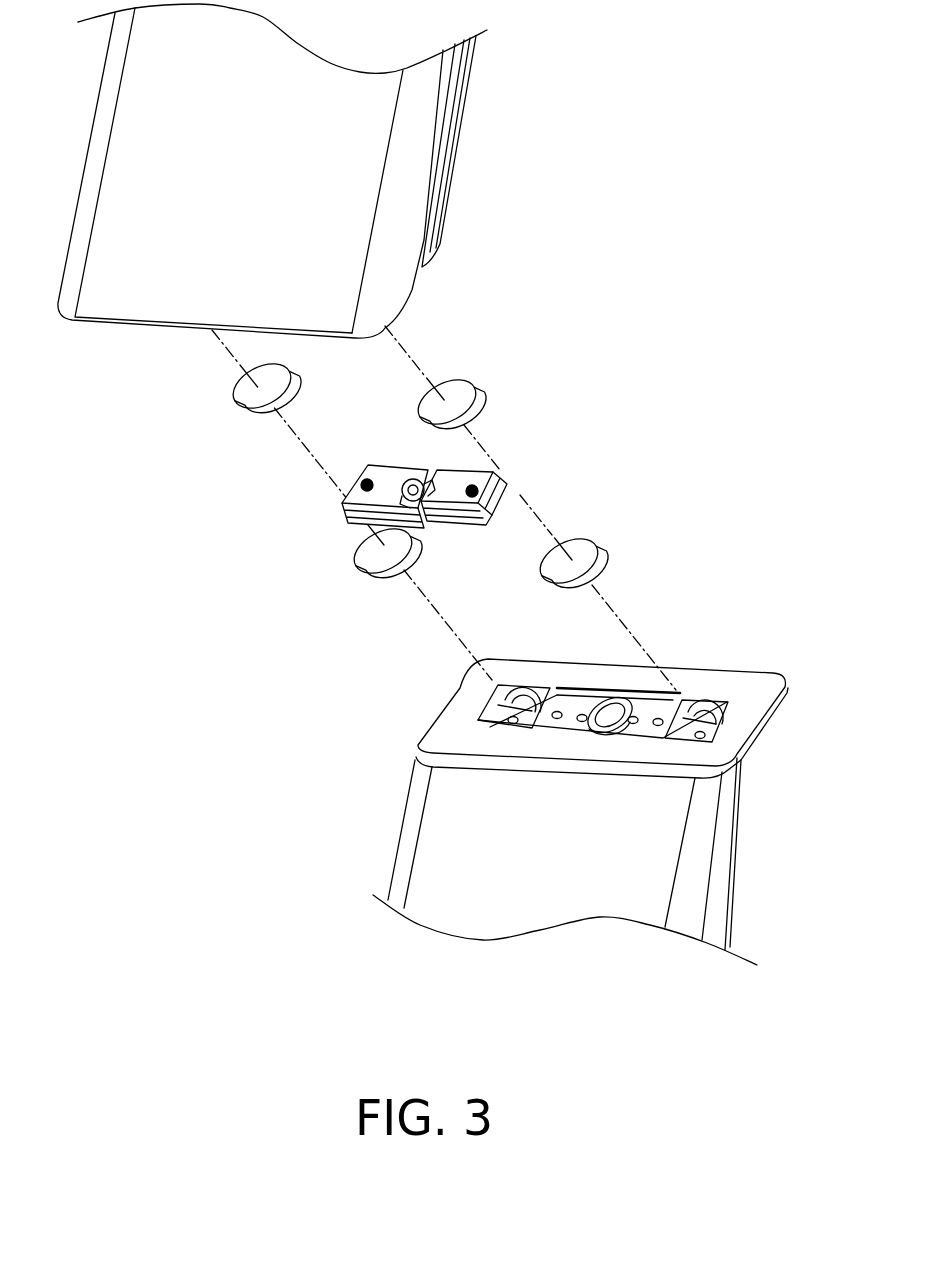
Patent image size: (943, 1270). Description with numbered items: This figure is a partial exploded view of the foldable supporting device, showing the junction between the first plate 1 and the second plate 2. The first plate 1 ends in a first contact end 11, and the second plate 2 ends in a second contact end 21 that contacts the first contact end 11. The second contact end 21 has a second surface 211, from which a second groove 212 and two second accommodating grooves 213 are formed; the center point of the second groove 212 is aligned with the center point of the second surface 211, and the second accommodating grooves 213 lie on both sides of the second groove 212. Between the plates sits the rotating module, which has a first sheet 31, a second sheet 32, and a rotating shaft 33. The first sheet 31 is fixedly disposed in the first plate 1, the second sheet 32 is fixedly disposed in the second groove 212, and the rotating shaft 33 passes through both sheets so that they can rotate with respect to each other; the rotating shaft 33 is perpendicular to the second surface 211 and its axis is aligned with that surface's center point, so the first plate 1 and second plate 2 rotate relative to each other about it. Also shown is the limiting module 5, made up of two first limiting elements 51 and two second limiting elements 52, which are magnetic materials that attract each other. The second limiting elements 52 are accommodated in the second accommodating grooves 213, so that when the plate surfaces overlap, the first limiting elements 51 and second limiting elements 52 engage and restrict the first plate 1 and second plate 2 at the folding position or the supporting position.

The first plate 1 is at (293, 171).
The first contact end 11 is at (410, 290).
The second plate 2 is at (559, 782).
The second contact end 21 is at (565, 689).
The second surface 211 is at (745, 683).
The second groove 212 is at (585, 703).
The second accommodating grooves 213 is at (532, 705).
The first sheet 31 is at (368, 465).
The second sheet 32 is at (457, 528).
The rotating shaft 33 is at (418, 480).
The limiting module 5 is at (543, 350).
The first limiting elements 51 is at (242, 398).
The second limiting elements 52 is at (373, 575).